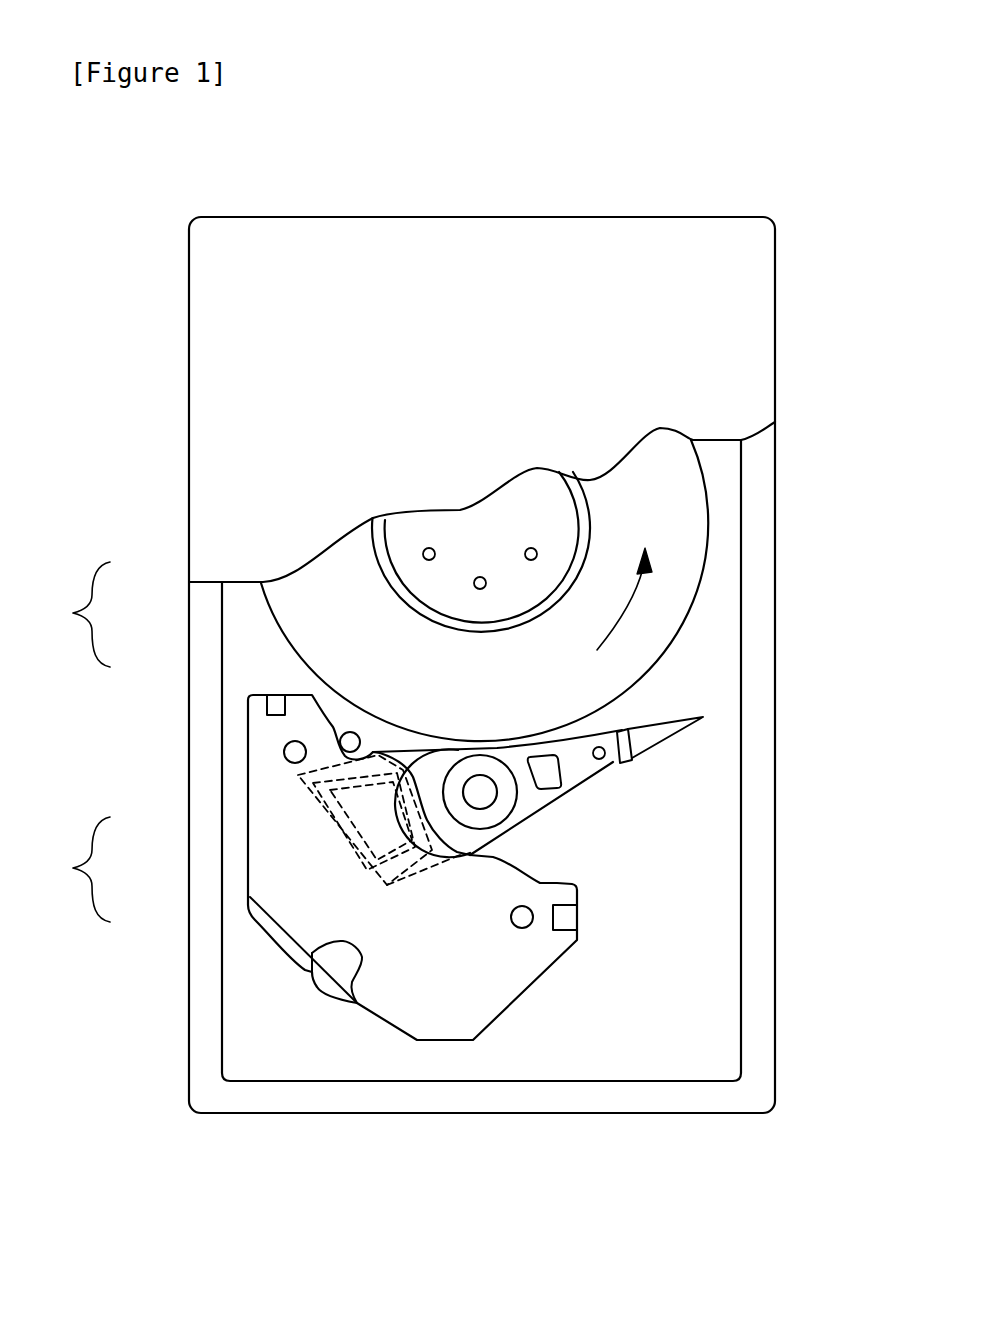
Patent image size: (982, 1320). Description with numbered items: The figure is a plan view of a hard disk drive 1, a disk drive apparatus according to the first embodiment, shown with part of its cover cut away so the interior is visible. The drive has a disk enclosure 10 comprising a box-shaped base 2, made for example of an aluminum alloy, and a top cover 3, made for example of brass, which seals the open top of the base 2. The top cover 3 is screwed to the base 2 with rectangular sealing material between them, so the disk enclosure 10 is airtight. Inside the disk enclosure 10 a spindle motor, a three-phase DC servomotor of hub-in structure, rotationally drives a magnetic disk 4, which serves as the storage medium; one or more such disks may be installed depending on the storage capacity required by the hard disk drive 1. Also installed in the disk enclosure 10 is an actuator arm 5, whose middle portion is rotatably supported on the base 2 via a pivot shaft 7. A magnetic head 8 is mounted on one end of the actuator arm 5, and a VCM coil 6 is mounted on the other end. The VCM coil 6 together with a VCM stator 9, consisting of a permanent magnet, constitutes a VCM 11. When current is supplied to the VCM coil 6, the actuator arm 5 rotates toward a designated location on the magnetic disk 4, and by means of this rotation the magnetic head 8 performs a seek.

The hard disk drive 1 is at (806, 252).
The base 2 is at (187, 613).
The top cover 3 is at (202, 552).
The magnetic disk 4 is at (697, 548).
The actuator arm 5 is at (588, 778).
The VCM coil 6 is at (347, 842).
The pivot shaft 7 is at (488, 805).
The magnetic head 8 is at (703, 720).
The VCM stator 9 is at (313, 895).
The disk enclosure 10 is at (69, 614).
The VCM 11 is at (69, 869).